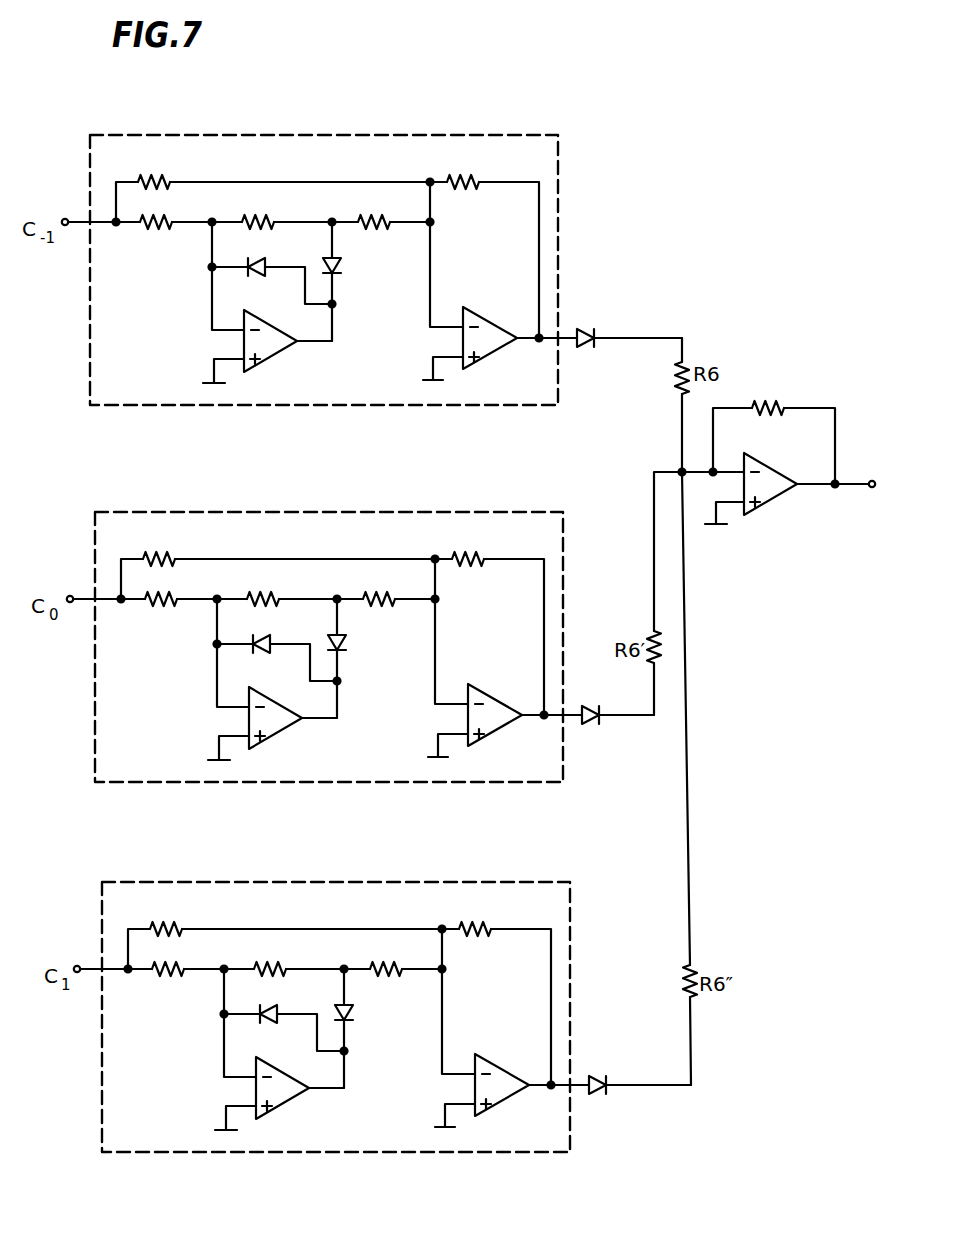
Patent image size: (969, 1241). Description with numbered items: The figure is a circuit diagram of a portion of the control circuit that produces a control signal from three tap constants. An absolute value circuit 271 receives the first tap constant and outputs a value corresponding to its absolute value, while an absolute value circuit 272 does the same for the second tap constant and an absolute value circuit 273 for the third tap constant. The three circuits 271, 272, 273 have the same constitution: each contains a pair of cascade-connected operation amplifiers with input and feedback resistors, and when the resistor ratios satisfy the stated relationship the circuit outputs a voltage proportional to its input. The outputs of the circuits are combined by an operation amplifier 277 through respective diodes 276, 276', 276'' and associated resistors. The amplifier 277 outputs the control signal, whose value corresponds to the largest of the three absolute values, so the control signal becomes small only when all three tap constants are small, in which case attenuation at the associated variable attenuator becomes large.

The absolute value circuit 271 is at (342, 135).
The absolute value circuit 272 is at (324, 621).
The absolute value circuit 273 is at (331, 991).
The diode 276 is at (629, 359).
The diode 276' is at (618, 736).
The diode 276'' is at (640, 1106).
The operation amplifier 277 is at (772, 506).